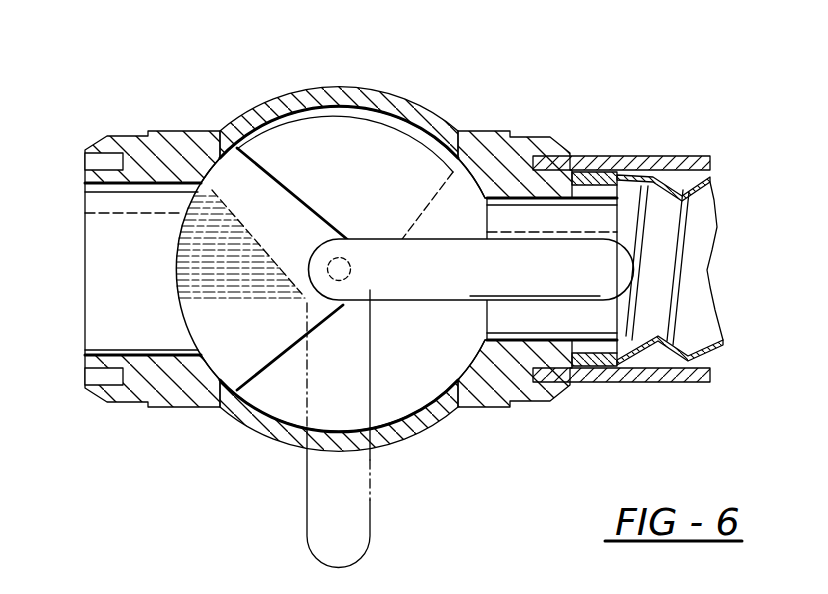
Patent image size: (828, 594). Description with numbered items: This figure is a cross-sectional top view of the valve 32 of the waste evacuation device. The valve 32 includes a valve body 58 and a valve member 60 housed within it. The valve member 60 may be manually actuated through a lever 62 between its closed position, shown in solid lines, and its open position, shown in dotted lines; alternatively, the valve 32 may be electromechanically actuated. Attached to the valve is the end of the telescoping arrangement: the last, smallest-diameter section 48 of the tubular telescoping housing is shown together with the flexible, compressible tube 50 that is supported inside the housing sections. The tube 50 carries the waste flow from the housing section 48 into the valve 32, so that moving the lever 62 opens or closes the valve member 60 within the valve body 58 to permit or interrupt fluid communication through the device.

The valve 32 is at (226, 111).
The last section of the telescoping housing 48 is at (675, 156).
The flexible, compressible tube 50 is at (708, 212).
The valve body 58 is at (378, 100).
The valve member 60 is at (407, 148).
The lever 62 is at (474, 294).